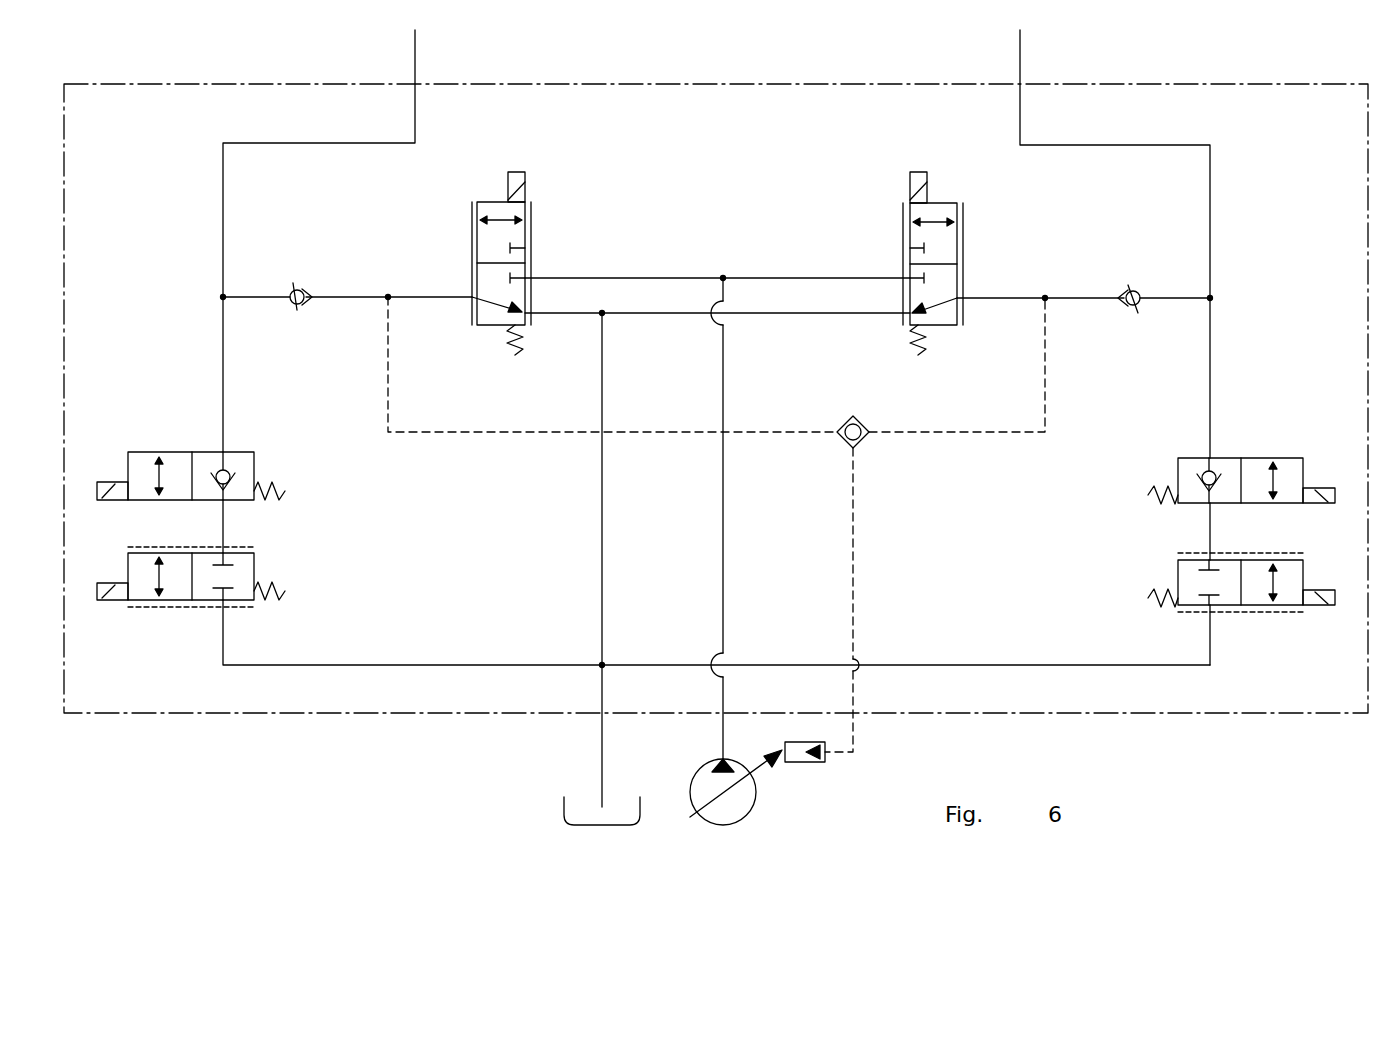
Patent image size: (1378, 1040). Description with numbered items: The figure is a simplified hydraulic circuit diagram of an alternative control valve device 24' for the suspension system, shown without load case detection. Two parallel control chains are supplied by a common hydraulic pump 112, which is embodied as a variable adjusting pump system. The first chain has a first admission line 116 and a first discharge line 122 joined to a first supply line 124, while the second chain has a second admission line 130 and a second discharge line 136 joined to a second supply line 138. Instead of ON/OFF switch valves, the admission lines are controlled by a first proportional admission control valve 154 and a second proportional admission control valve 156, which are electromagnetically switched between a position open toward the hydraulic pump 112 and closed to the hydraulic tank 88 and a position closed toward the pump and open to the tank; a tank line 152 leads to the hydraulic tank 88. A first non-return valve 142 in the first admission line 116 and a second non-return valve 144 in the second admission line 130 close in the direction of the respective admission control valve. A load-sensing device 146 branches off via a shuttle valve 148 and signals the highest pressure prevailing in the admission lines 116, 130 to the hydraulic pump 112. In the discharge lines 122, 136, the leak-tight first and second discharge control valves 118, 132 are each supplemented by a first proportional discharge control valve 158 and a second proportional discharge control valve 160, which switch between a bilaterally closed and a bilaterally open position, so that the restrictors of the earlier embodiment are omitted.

The control valve device 24' is at (716, 430).
The hydraulic tank 88 is at (590, 826).
The hydraulic pump 112 is at (756, 808).
The first admission line 116 is at (348, 297).
The first discharge control valve 118 is at (178, 452).
The first discharge line 122 is at (225, 638).
The first supply line 124 is at (412, 48).
The second admission line 130 is at (997, 300).
The second discharge control valve 132 is at (1258, 458).
The second discharge line 136 is at (1213, 390).
The second supply line 138 is at (1022, 57).
The first non-return valve 142 is at (305, 288).
The second non-return valve 144 is at (1138, 296).
The load-sensing device 146 is at (853, 580).
The shuttle valve 148 is at (852, 420).
The tank line 152 is at (602, 570).
The first proportional admission control valve 154 is at (531, 234).
The second proportional admission control valve 156 is at (963, 232).
The first proportional discharge control valve 158 is at (142, 600).
The second proportional discharge control valve 160 is at (1255, 605).